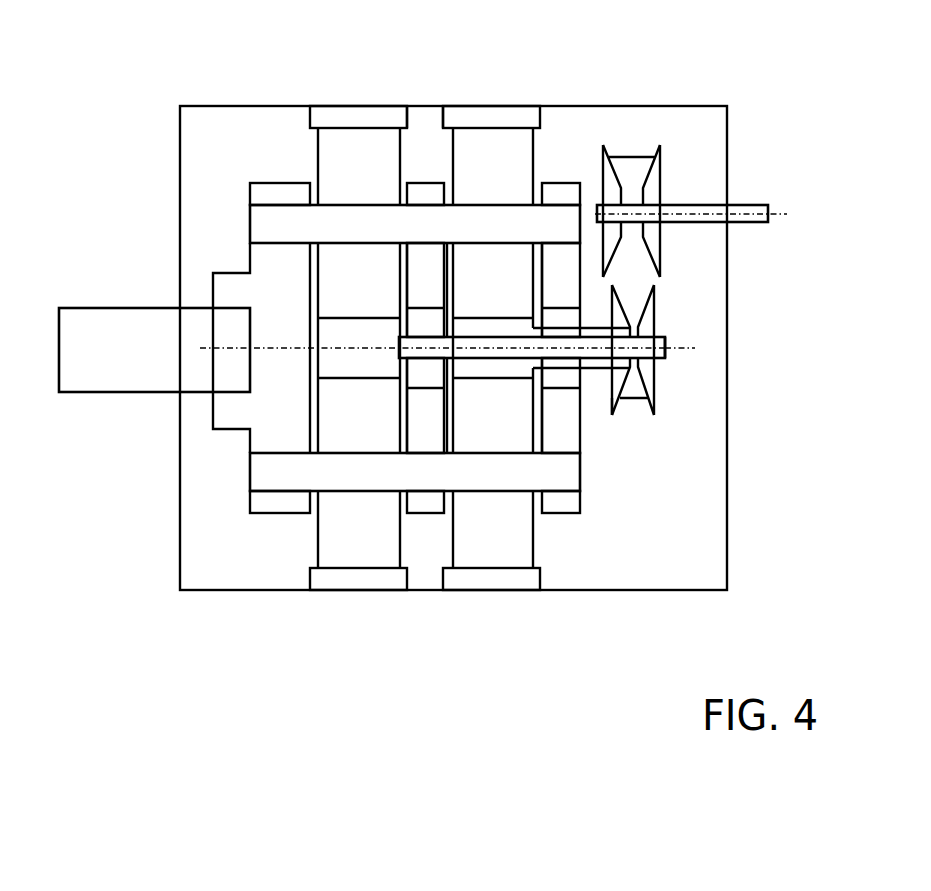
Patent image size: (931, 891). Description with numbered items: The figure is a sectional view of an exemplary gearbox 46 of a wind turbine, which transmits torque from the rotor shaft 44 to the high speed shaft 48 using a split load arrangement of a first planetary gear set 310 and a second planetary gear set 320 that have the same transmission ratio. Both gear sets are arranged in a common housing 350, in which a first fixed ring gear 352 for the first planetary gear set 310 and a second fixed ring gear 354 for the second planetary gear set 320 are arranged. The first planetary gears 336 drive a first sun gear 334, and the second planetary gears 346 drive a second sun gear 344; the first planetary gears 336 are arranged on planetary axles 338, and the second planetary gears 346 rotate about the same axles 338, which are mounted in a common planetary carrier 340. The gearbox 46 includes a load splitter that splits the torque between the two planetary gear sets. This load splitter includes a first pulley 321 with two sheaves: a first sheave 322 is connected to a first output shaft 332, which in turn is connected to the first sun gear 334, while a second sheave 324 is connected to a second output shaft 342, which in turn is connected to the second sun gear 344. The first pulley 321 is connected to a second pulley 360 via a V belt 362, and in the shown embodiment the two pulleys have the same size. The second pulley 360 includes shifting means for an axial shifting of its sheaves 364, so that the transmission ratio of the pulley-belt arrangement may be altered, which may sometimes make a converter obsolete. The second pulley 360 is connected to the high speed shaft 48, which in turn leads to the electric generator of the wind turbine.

The rotor shaft 44 is at (110, 393).
The gearbox 46 is at (438, 675).
The high speed shaft 48 is at (670, 223).
The first planetary gear set 310 is at (357, 92).
The second planetary gear set 320 is at (493, 92).
The first pulley 321 is at (672, 307).
The first sheave 322 is at (655, 328).
The second sheave 324 is at (613, 407).
The first output shaft 332 is at (663, 360).
The first sun gear 334 is at (373, 316).
The first planetary gears 336 is at (318, 170).
The planetary axles 338 is at (243, 230).
The common planetary carrier 340 is at (213, 295).
The second output shaft 342 is at (592, 368).
The second sun gear 344 is at (512, 316).
The second planetary gears 346 is at (540, 137).
The common housing 350 is at (178, 188).
The first fixed ring gear 352 is at (305, 112).
The second fixed ring gear 354 is at (437, 115).
The second pulley 360 is at (682, 184).
The V belt 362 is at (642, 402).
The sheaves 364 is at (668, 165).